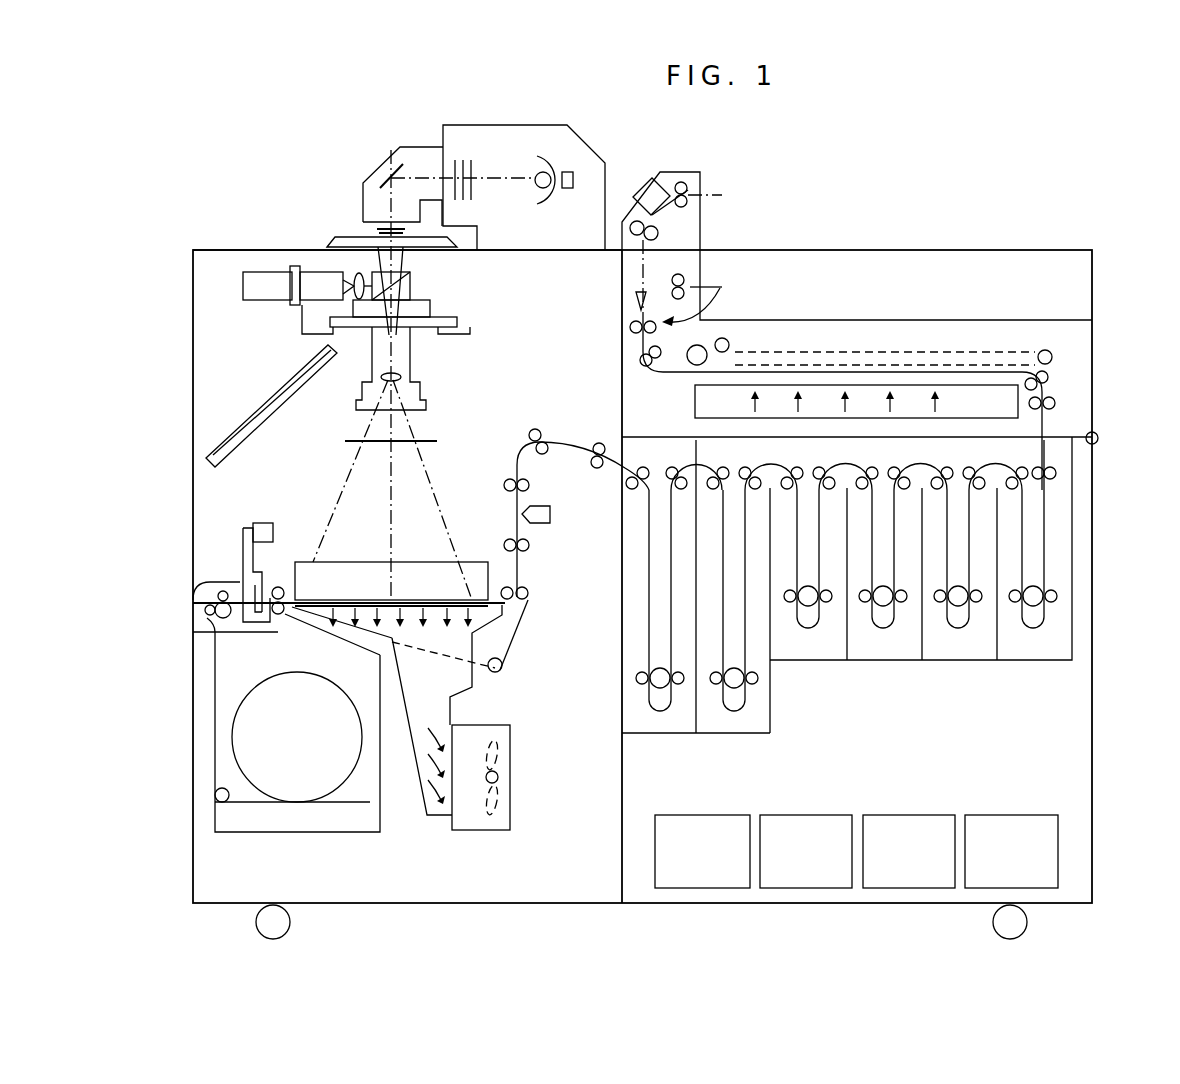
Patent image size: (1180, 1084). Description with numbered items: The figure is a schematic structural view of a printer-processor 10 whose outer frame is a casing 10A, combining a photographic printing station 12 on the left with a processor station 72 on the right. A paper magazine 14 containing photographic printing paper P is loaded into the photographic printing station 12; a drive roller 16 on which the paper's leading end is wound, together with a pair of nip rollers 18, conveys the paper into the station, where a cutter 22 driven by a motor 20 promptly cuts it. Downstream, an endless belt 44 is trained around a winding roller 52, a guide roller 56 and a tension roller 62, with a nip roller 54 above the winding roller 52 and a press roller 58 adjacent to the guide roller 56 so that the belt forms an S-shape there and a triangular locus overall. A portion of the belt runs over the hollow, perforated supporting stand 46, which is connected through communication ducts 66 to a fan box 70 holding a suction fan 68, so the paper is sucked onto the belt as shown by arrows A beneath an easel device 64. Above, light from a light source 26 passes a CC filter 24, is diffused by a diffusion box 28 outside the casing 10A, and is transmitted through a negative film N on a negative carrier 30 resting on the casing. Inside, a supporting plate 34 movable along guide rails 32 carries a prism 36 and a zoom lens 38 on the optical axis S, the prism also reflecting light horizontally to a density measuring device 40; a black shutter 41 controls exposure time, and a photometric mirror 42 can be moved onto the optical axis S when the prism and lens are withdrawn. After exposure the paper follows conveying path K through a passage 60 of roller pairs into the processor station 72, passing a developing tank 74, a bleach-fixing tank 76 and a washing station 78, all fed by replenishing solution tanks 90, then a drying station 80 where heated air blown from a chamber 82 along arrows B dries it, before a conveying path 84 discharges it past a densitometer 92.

The printer-processor 10 is at (978, 180).
The casing 10A is at (240, 250).
The photographic printing station 12 is at (194, 242).
The paper magazine 14 is at (268, 832).
The drive roller 16 is at (213, 628).
The nip rollers 18 is at (215, 584).
The motor 20 is at (263, 523).
The cutter 22 is at (268, 578).
The CC filter 24 is at (465, 203).
The light source 26 is at (577, 157).
The diffusion box 28 is at (392, 152).
The negative carrier 30 is at (330, 244).
The guide rails 32 is at (468, 332).
The supporting plate 34 is at (430, 340).
The prism 36 is at (412, 290).
The zoom lens 38 is at (425, 412).
The density measuring device 40 is at (243, 288).
The black shutter 41 is at (347, 440).
The photometric mirror 42 is at (292, 386).
The endless belt 44 is at (526, 632).
The supporting stand 46 is at (480, 634).
The winding roller 52 is at (278, 618).
The nip roller 54 is at (292, 596).
The guide roller 56 is at (528, 592).
The press roller 58 is at (518, 568).
The passage 60 is at (548, 426).
The tension roller 62 is at (503, 670).
The easel device 64 is at (482, 562).
The communication ducts 66 is at (445, 712).
The suction fan 68 is at (500, 800).
The fan box 70 is at (485, 832).
The processor station 72 is at (1100, 252).
The developing tank 74 is at (672, 733).
The bleach-fixing tank 76 is at (742, 733).
The washing station 78 is at (776, 672).
The drying station 80 is at (1068, 360).
The chamber 82 is at (1005, 420).
The conveying path 84 is at (703, 308).
The replenishing solution tanks 90 is at (950, 800).
The densitometer 92 is at (700, 172).
The negative film N is at (380, 216).
The optical axis S is at (392, 470).
The conveying path K is at (572, 454).
The arrows A is at (430, 608).
The arrows B is at (893, 400).
The photographic printing paper P is at (213, 702).